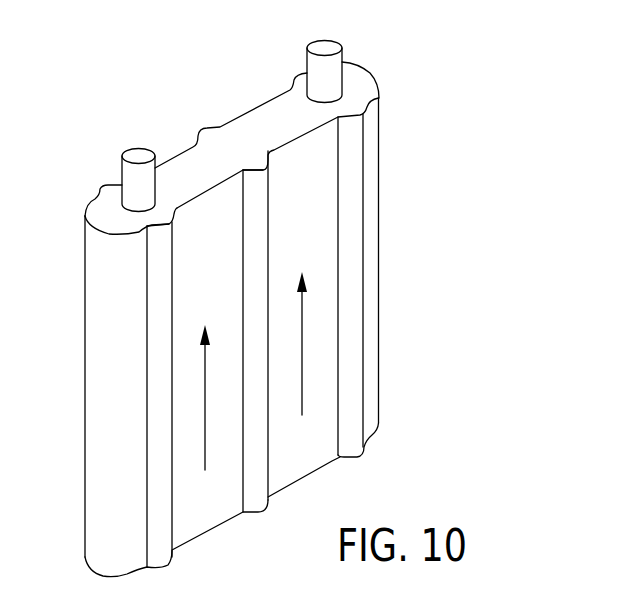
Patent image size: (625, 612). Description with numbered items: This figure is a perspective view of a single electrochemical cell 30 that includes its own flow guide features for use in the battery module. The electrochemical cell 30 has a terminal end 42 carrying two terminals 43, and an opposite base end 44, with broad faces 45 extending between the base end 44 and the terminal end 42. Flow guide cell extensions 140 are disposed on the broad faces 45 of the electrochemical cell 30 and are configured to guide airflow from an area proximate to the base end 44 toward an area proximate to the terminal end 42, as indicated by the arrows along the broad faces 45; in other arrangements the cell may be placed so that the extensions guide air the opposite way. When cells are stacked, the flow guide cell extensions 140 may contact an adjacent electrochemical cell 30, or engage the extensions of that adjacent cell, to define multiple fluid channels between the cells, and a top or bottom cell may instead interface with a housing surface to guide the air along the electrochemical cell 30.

The electrochemical cell 30 is at (494, 117).
The terminal end 42 is at (198, 165).
The terminals 43 is at (137, 155).
The base end 44 is at (315, 468).
The broad faces 45 is at (328, 318).
The flow guide cell extensions 140 is at (100, 189).